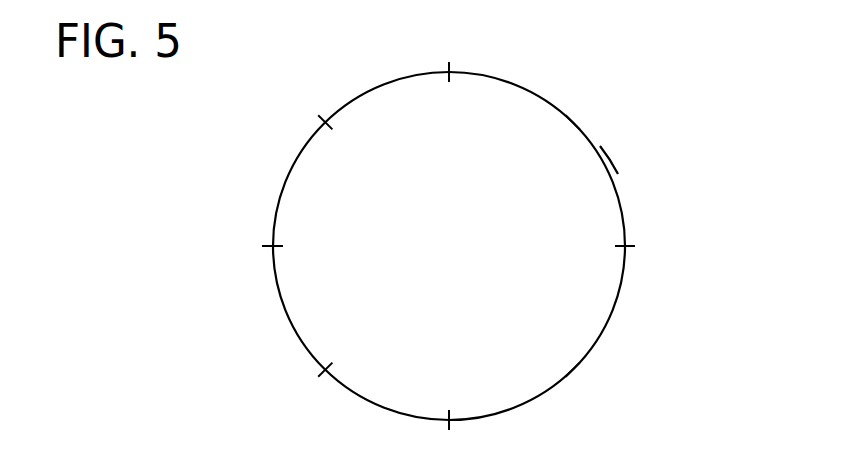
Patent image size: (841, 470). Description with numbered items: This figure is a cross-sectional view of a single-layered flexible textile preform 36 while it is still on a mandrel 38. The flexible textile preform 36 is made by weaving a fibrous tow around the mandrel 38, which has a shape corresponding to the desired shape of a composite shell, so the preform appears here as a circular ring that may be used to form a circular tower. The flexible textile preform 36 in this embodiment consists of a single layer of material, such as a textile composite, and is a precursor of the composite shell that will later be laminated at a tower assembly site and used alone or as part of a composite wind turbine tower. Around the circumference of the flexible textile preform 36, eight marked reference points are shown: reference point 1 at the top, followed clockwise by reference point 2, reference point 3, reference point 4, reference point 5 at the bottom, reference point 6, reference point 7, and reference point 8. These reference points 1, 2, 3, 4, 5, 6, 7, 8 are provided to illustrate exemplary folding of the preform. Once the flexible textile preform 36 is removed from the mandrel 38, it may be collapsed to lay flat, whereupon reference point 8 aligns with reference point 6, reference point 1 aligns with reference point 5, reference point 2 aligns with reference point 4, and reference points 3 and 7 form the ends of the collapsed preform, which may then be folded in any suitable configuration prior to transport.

The flexible textile preform 36 is at (622, 341).
The mandrel 38 is at (573, 185).
The reference point 1 is at (451, 58).
The reference point 2 is at (583, 112).
The reference point 3 is at (635, 246).
The reference point 4 is at (582, 382).
The reference point 5 is at (451, 436).
The reference point 6 is at (314, 382).
The reference point 7 is at (264, 248).
The reference point 8 is at (315, 109).